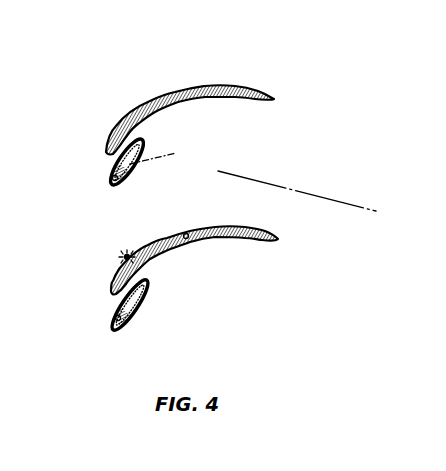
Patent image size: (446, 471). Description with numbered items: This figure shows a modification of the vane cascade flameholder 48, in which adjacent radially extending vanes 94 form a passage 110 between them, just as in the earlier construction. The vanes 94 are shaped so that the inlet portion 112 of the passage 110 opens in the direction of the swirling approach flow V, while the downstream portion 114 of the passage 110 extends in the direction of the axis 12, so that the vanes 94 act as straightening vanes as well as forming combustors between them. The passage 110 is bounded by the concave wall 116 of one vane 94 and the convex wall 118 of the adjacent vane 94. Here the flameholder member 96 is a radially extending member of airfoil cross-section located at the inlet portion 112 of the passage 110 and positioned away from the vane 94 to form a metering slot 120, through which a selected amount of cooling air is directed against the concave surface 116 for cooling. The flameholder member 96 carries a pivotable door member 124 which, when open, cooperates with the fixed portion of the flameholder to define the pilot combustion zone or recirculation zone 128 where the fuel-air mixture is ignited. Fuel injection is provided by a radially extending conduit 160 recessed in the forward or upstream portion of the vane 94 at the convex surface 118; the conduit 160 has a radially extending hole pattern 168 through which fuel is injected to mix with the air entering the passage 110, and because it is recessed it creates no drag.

The axis 12 is at (356, 204).
The vane cascade flameholder 48 is at (257, 82).
The vane 94 is at (222, 88).
The flameholder member 96 is at (112, 178).
The passage 110 is at (204, 213).
The inlet portion 112 is at (103, 260).
The downstream portion 114 is at (258, 105).
The concave wall 116 is at (174, 106).
The convex wall 118 is at (187, 241).
The metering slot 120 is at (120, 127).
The door member 124 is at (164, 160).
The recirculation zone 128 is at (183, 140).
The conduit 160 is at (140, 263).
The hole pattern 168 is at (135, 253).
The swirling approach flow V is at (127, 197).